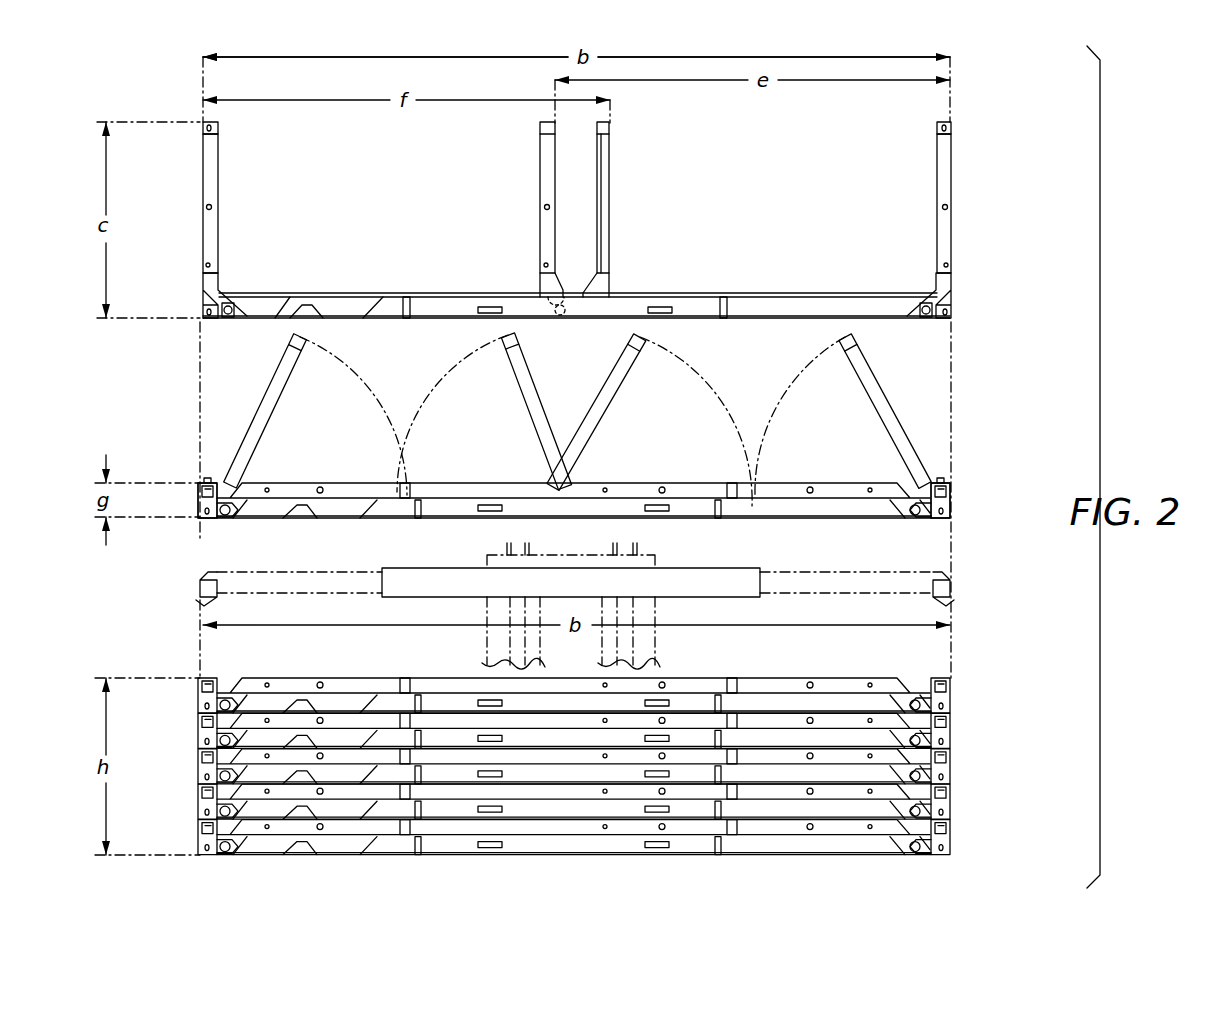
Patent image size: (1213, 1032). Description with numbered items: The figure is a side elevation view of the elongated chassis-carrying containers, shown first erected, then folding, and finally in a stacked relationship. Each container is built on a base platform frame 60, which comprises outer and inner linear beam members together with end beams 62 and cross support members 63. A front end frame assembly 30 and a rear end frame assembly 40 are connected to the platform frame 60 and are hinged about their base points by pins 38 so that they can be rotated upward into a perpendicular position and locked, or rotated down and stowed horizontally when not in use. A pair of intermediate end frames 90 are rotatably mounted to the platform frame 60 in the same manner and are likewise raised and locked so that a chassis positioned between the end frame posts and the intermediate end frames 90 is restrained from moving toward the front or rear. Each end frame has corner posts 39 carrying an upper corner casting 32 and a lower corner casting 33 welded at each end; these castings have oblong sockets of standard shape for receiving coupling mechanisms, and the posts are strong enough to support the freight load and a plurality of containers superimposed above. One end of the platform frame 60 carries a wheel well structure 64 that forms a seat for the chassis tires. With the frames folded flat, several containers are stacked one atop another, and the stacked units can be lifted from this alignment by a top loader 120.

The front end frame assembly 30 is at (222, 188).
The upper corner casting 32 is at (220, 128).
The lower corner casting 33 is at (200, 320).
The pin 38 is at (228, 307).
The corner post 39 is at (220, 220).
The rear end frame assembly 40 is at (936, 195).
The platform frame 60 is at (657, 297).
The end beam 62 is at (300, 293).
The cross support member 63 is at (487, 313).
The wheel well structure 64 is at (210, 482).
The intermediate end frame 90 is at (540, 178).
The top loader 120 is at (950, 565).